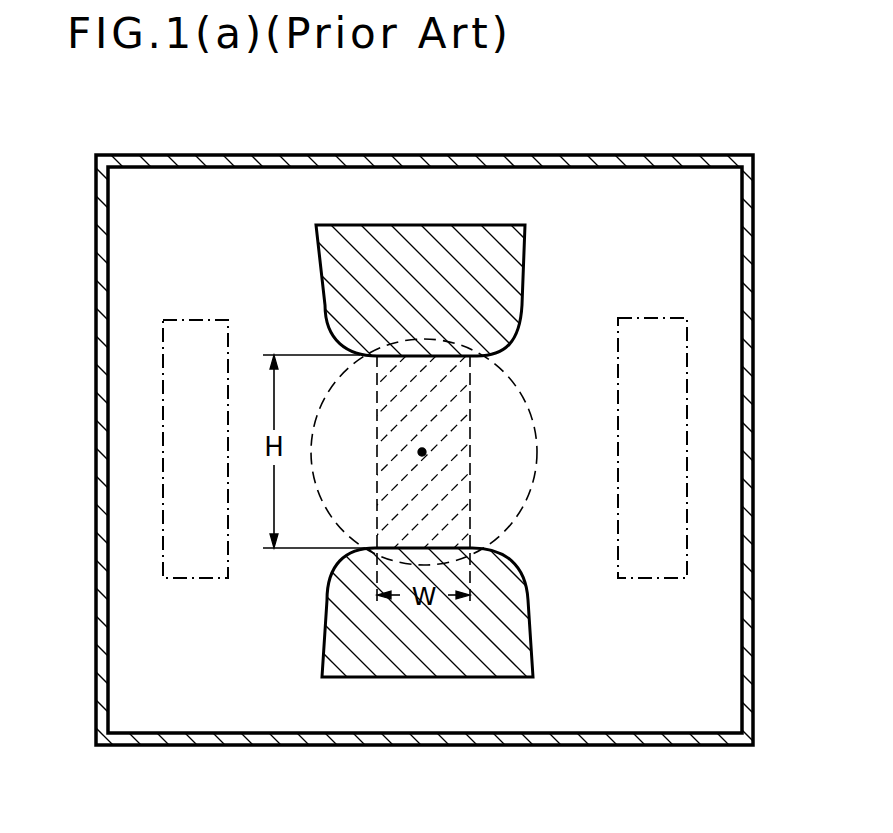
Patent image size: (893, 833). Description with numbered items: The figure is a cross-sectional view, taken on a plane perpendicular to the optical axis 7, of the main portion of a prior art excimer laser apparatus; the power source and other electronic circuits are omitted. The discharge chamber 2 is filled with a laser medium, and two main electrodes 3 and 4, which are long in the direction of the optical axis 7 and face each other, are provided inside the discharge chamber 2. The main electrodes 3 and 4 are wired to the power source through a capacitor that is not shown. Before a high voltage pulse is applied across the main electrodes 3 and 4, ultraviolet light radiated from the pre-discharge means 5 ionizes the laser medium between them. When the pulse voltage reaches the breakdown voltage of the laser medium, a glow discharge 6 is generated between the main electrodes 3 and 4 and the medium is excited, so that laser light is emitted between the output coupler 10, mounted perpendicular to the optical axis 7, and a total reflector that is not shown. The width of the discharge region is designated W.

The discharge chamber 2 is at (574, 163).
The main electrode 3 is at (481, 232).
The main electrode 4 is at (393, 650).
The pre-discharge means 5 is at (173, 454).
The glow discharge 6 is at (457, 407).
The optical axis 7 is at (422, 452).
The output coupler 10 is at (502, 492).